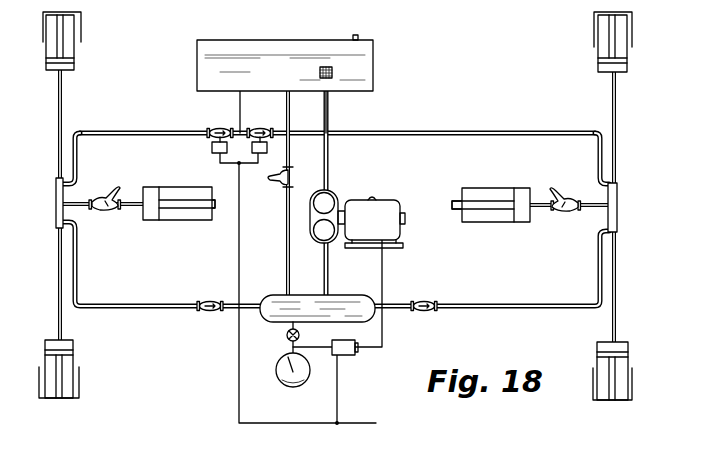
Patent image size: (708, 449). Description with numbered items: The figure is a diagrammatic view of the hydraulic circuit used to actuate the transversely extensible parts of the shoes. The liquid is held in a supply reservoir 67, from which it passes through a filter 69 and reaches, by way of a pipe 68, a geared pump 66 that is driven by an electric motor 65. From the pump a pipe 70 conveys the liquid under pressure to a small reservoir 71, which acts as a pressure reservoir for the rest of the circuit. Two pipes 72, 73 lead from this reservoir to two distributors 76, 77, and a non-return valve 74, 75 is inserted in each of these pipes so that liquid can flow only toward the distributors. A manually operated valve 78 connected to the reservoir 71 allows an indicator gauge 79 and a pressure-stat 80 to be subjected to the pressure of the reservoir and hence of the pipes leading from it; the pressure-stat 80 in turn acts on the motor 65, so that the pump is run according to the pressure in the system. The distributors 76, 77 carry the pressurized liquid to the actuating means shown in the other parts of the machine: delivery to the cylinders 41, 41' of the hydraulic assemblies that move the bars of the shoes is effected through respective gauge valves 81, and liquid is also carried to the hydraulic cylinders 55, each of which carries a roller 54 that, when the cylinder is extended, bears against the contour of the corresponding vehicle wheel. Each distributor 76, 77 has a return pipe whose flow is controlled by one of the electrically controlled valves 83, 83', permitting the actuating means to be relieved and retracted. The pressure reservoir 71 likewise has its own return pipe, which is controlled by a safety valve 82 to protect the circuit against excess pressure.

The cylinder 41 is at (179, 190).
The cylinder 41' is at (491, 191).
The roller 54 is at (43, 25).
The hydraulic cylinder 55 is at (52, 50).
The electric motor 65 is at (393, 211).
The geared pump 66 is at (342, 207).
The supply reservoir 67 is at (292, 72).
The pipe 68 is at (331, 113).
The filter 69 is at (331, 68).
The pipe 70 is at (328, 273).
The small reservoir 71 is at (275, 322).
The pipe 72 is at (478, 310).
The pipe 73 is at (148, 310).
The non-return valve 74 is at (423, 300).
The non-return valve 75 is at (205, 314).
The distributor 76 is at (617, 212).
The distributor 77 is at (57, 190).
The manually operated valve 78 is at (287, 340).
The indicator gauge 79 is at (297, 386).
The pressure-stat 80 is at (349, 352).
The gauge valve 81 is at (107, 210).
The safety valve 82 is at (279, 184).
The electrically controlled valve 83 is at (207, 130).
The electrically controlled valve 83' is at (262, 127).